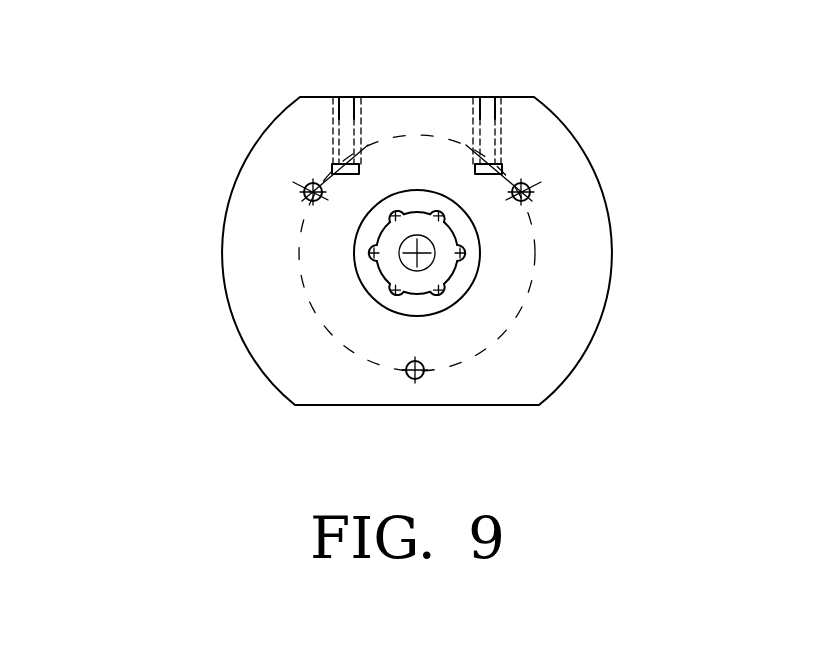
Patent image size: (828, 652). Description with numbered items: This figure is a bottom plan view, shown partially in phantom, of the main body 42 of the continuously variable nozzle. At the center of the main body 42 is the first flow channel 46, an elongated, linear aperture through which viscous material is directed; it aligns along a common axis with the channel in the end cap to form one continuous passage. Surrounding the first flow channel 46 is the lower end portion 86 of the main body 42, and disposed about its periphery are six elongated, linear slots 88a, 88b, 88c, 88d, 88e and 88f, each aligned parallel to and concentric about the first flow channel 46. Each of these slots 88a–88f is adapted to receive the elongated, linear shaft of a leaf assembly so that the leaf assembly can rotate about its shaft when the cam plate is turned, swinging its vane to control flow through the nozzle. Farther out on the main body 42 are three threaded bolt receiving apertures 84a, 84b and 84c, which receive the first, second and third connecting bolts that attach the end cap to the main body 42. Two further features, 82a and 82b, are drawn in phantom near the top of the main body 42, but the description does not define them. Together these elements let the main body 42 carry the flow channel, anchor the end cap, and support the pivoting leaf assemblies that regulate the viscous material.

The main body 42 is at (164, 200).
The first flow channel 46 is at (455, 272).
The locating pin 82a is at (334, 128).
The locating pin 82b is at (474, 127).
The threaded bolt receiving aperture 84a is at (304, 193).
The threaded bolt receiving aperture 84b is at (532, 193).
The threaded bolt receiving aperture 84c is at (411, 378).
The lower end portion 86 is at (389, 281).
The elongated linear slot 88a is at (397, 208).
The elongated linear slot 88b is at (442, 208).
The elongated linear slot 88c is at (448, 262).
The elongated linear slot 88d is at (440, 296).
The elongated linear slot 88e is at (397, 294).
The elongated linear slot 88f is at (376, 260).